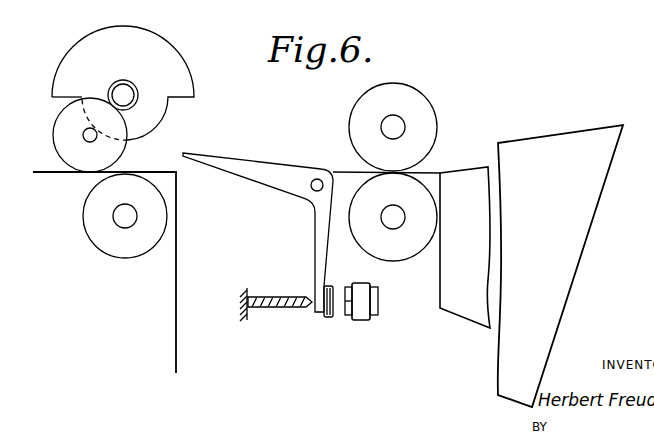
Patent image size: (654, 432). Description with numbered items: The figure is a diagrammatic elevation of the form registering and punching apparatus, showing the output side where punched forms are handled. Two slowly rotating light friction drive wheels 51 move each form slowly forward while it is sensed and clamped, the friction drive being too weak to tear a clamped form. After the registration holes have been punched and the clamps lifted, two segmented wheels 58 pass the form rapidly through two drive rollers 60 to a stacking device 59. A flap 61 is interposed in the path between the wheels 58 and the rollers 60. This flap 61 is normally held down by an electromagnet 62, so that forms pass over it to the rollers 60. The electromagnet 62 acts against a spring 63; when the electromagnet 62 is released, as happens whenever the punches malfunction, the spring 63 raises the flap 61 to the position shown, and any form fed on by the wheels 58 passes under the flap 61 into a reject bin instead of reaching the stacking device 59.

The light friction drive wheels 51 is at (67, 143).
The segmented wheels 58 is at (123, 83).
The stacking device 59 is at (556, 255).
The drive rollers 60 is at (415, 188).
The flap 61 is at (265, 170).
The electromagnet 62 is at (359, 322).
The spring 63 is at (287, 297).